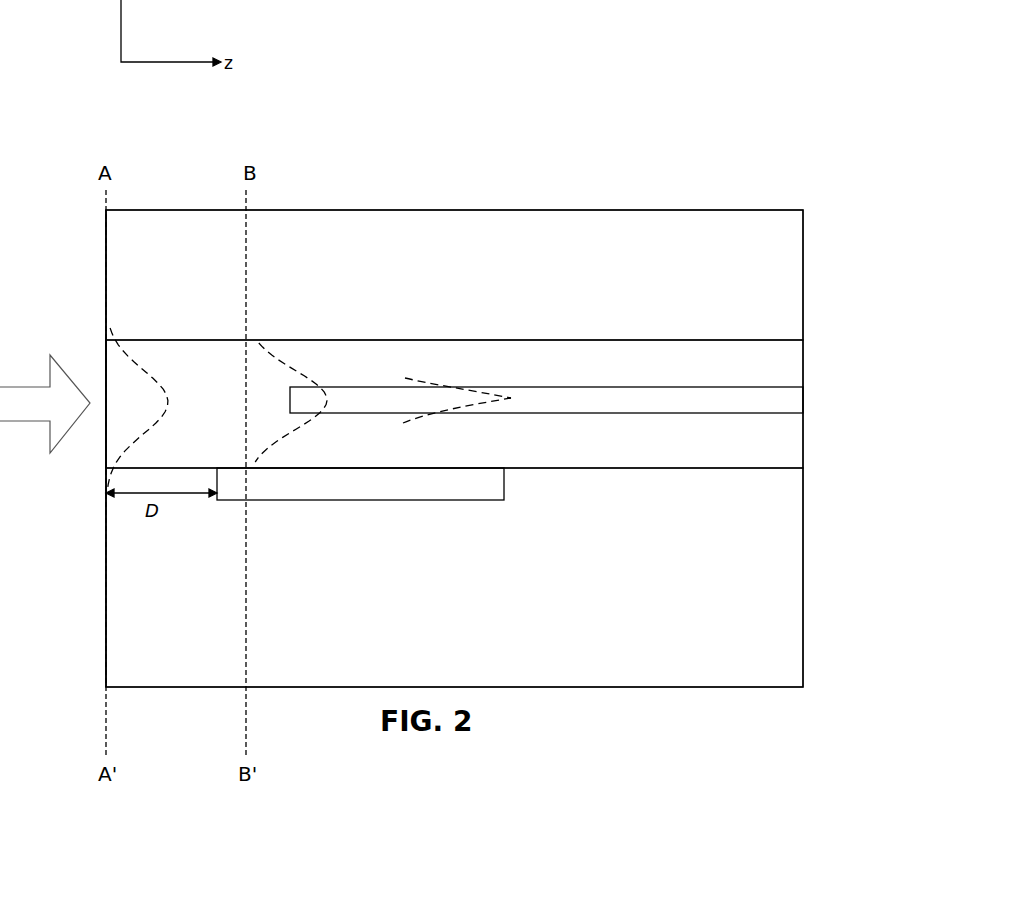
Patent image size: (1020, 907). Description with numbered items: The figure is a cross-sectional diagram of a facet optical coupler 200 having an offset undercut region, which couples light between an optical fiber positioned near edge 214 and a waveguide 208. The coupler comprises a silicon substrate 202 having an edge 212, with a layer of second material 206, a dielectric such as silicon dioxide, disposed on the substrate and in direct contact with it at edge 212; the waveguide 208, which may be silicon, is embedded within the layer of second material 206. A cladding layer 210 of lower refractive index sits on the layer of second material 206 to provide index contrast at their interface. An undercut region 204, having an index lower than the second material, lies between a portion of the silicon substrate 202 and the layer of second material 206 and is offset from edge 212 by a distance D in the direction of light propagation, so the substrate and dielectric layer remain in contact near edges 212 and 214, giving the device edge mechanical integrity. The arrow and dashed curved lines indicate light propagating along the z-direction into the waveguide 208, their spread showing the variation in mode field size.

The facet optical coupler 200 is at (626, 114).
The silicon substrate 202 is at (454, 577).
The undercut region 204 is at (360, 484).
The layer of second material 206 is at (454, 404).
The waveguide 208 is at (792, 407).
The cladding layer 210 is at (454, 275).
The edge of silicon substrate 212 is at (106, 538).
The edge of layer of second material 214 is at (106, 451).